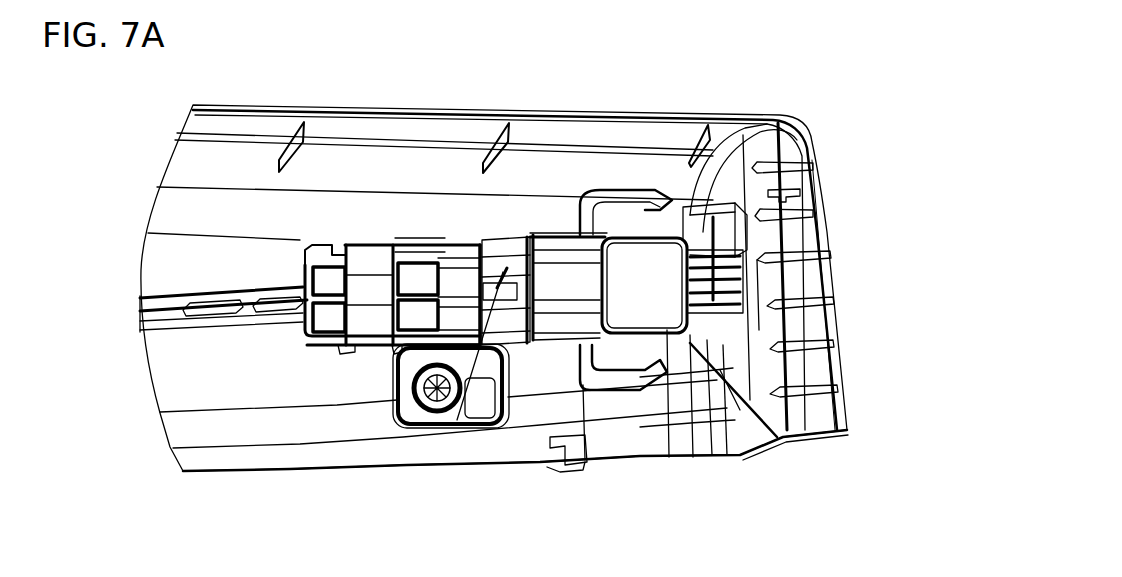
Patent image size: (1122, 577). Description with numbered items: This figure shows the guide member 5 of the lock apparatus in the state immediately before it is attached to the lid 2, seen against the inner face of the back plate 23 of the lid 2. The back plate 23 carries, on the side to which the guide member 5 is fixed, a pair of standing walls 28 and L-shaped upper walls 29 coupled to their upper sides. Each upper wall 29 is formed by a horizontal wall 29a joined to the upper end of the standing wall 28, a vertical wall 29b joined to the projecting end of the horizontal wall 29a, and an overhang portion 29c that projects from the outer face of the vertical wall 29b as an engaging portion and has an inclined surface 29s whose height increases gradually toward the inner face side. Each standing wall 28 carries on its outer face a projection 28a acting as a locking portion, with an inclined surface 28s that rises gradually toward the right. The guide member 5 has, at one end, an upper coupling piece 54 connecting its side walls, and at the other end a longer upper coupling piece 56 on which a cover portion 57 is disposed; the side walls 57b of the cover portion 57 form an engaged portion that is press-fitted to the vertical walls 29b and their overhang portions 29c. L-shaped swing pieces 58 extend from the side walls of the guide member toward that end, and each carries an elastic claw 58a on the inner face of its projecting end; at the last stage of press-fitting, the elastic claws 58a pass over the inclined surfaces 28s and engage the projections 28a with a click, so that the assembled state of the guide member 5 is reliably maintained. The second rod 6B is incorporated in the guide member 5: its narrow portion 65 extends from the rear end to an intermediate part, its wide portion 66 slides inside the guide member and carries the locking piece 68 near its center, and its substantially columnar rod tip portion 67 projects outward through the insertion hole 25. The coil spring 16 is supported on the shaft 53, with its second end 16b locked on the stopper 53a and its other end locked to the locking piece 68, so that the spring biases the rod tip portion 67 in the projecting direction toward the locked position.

The back plate 23 is at (246, 102).
The lid 2 is at (494, 260).
The guide member 5 is at (370, 240).
The upper coupling piece 54 is at (399, 198).
The locking piece 68 is at (492, 280).
The upper coupling piece 56 is at (553, 273).
The swing piece 58 is at (660, 200).
The elastic claw 58a is at (677, 296).
The inclined surface 29s is at (718, 125).
The upper wall 29 is at (833, 276).
The horizontal wall 29a is at (712, 220).
The vertical wall 29b is at (740, 260).
The overhang portion 29c is at (723, 232).
The insertion hole 25 is at (737, 267).
The rod tip portion 67 is at (737, 281).
The standing wall 28 is at (803, 393).
The projection 28a is at (773, 440).
The inclined surface 28s is at (698, 396).
The cover portion 57 is at (577, 315).
The side walls 57b is at (637, 215).
The wide portion 66 is at (305, 270).
The narrow portion 65 is at (160, 293).
The second rod 6B is at (173, 290).
The shaft 53 is at (472, 345).
The stopper 53a is at (408, 420).
The coil spring 16 is at (427, 423).
The second end 16b is at (548, 458).